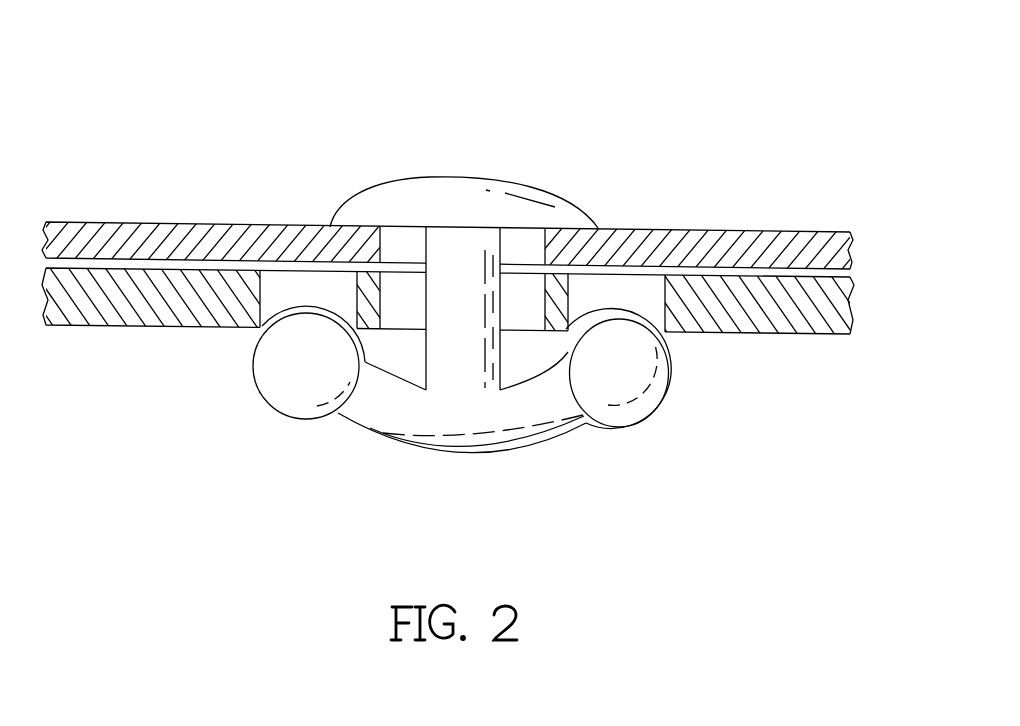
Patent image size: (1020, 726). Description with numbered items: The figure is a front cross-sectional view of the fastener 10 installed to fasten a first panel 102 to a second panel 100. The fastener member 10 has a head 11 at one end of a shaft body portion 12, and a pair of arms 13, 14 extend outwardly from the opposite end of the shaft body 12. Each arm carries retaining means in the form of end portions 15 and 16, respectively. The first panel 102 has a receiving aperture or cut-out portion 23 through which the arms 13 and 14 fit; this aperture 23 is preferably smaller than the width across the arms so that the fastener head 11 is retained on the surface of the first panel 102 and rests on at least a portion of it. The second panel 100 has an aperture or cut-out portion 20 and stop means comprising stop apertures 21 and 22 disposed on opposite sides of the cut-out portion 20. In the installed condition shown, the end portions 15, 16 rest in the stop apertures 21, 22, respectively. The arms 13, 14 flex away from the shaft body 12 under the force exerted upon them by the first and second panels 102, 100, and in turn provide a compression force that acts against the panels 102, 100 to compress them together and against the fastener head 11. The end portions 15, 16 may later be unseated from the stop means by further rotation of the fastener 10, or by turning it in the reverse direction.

The fastener member 10 is at (533, 134).
The head 11 is at (372, 200).
The shaft body portion 12 is at (466, 268).
The arm 13 is at (405, 430).
The arm 14 is at (527, 427).
The end portion 15 is at (298, 388).
The end portion 16 is at (657, 387).
The aperture or cut-out portion 20 is at (407, 310).
The stop aperture 21 is at (262, 325).
The stop aperture 22 is at (633, 260).
The receiving aperture 23 is at (407, 243).
The second panel 100 is at (786, 334).
The first panel 102 is at (707, 228).